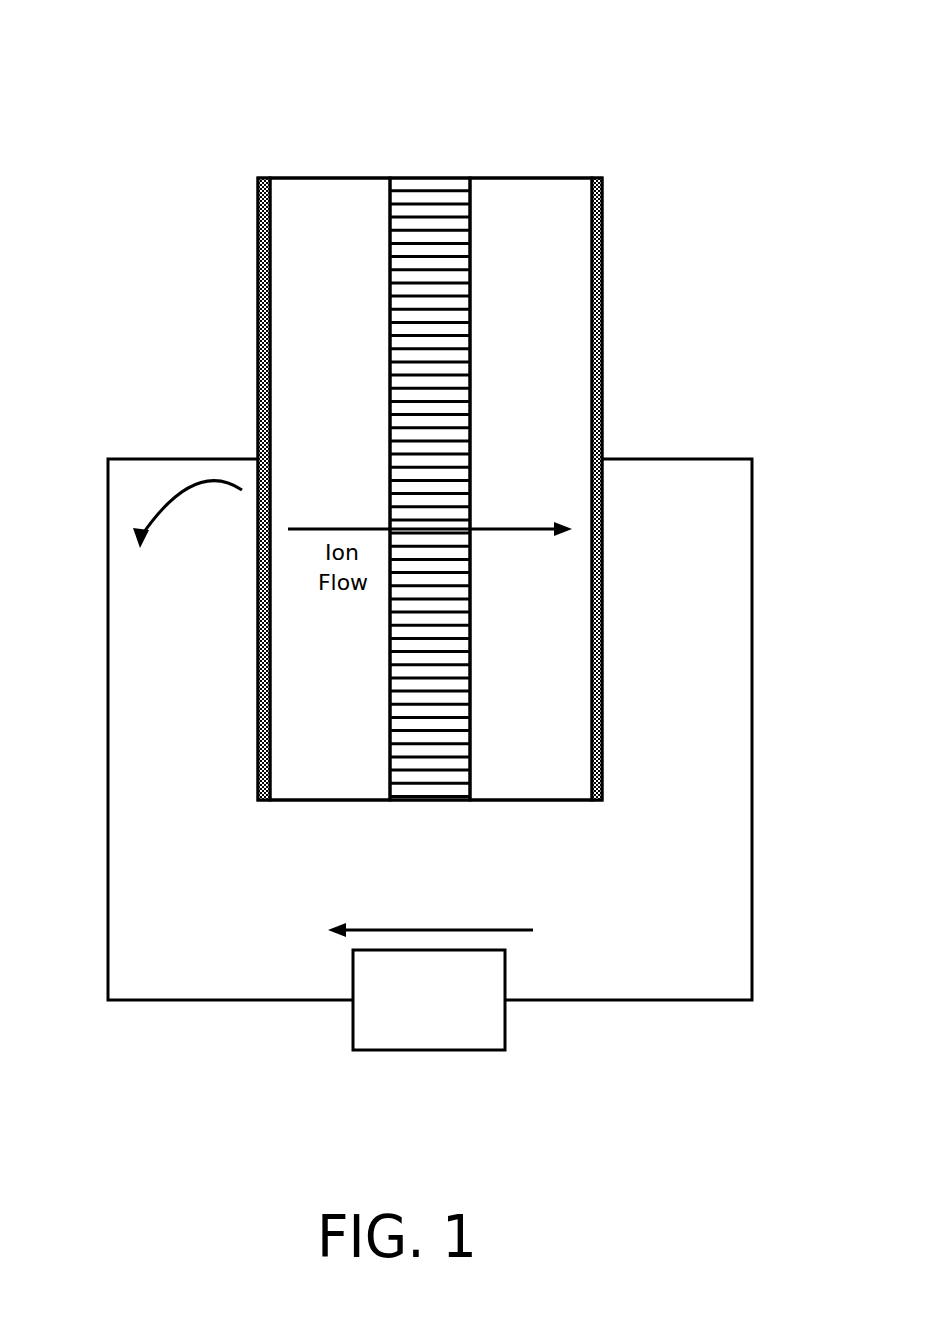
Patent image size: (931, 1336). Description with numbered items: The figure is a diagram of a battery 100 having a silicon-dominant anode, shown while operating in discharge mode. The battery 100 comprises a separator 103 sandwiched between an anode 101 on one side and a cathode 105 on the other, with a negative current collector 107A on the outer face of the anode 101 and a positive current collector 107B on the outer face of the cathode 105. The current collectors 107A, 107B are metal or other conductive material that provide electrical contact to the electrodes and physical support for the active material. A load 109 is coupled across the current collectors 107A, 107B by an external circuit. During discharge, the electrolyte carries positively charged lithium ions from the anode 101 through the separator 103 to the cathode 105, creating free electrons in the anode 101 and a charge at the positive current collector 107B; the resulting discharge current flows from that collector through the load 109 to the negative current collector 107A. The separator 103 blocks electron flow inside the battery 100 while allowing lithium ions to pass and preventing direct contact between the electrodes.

The battery 100 is at (94, 74).
The anode 101 is at (288, 387).
The separator 103 is at (432, 180).
The cathode 105 is at (575, 392).
The negative current collector 107A is at (258, 193).
The positive current collector 107B is at (604, 203).
The load 109 is at (430, 1050).